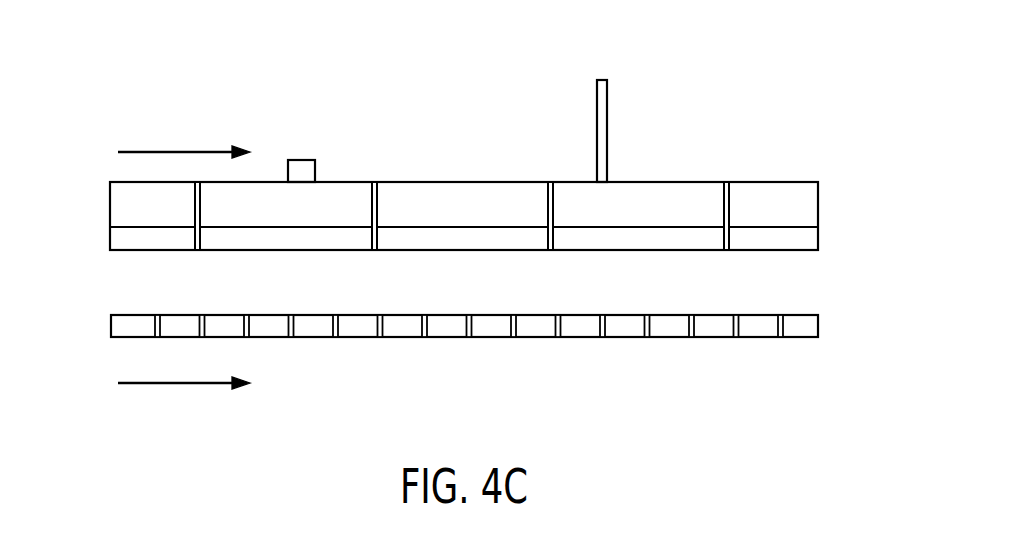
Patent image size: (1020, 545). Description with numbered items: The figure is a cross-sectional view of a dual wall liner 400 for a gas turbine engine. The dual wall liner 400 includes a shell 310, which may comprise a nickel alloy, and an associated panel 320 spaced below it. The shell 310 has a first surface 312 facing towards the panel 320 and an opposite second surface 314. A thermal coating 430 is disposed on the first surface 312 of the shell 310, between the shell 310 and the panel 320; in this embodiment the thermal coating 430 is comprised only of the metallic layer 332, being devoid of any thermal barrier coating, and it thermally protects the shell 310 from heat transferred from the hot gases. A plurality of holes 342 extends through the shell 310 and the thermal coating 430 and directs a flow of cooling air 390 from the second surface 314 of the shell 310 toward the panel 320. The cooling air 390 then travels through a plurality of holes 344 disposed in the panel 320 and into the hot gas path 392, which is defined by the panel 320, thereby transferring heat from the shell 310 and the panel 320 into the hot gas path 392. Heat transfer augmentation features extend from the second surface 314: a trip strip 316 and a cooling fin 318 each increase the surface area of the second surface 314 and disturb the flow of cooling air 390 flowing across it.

The shell 310 is at (808, 205).
The first surface 312 is at (643, 228).
The second surface 314 is at (650, 182).
The trip strip 316 is at (306, 160).
The cooling fin 318 is at (603, 80).
The panel 320 is at (810, 327).
The metallic layer 332 is at (808, 240).
The plurality of holes 342 is at (377, 207).
The plurality of holes 344 is at (470, 325).
The flow of cooling air 390 is at (176, 150).
The hot gas path 392 is at (180, 383).
The dual wall liner 400 is at (720, 146).
The thermal coating 430 is at (117, 240).